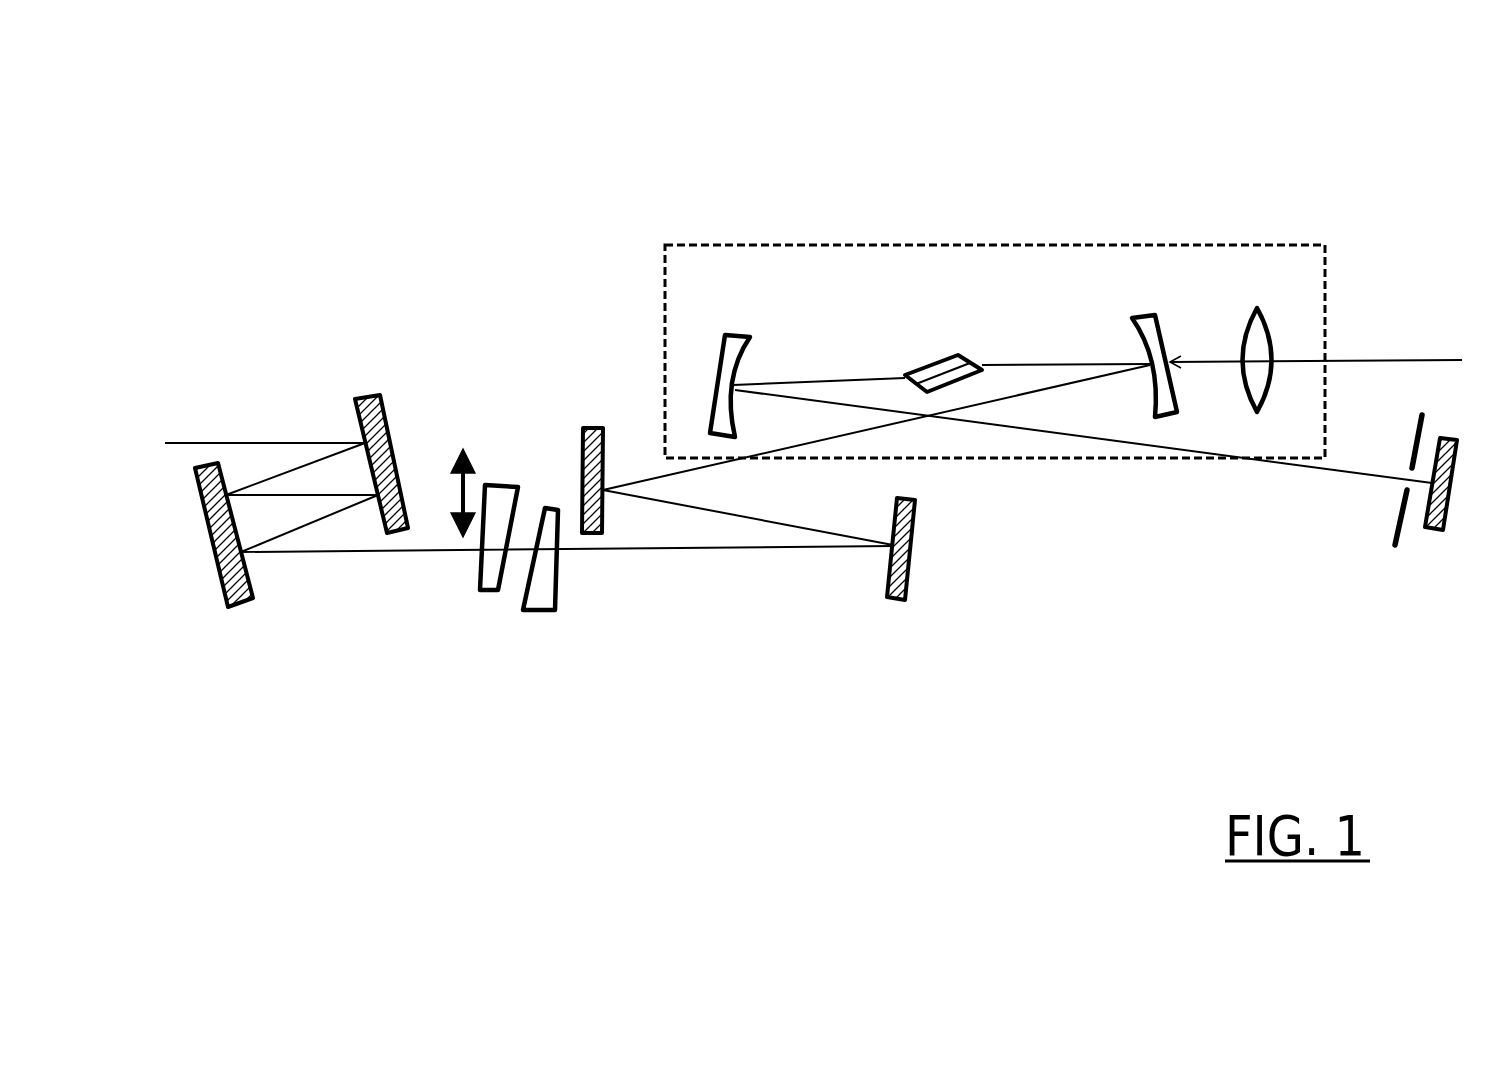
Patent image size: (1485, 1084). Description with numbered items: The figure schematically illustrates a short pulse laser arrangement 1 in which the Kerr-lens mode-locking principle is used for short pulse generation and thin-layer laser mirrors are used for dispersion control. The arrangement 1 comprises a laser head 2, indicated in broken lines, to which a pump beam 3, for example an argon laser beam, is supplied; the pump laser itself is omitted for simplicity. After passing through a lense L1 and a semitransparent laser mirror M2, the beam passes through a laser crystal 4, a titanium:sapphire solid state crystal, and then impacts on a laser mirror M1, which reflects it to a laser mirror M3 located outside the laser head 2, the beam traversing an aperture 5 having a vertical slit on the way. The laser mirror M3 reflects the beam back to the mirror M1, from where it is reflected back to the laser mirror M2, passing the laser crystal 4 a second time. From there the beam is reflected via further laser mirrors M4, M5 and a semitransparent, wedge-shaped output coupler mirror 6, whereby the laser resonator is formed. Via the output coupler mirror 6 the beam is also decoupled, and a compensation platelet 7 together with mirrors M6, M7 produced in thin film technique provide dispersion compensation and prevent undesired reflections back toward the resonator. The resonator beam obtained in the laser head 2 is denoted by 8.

The short pulse laser arrangement 1 is at (501, 255).
The laser head 2 is at (797, 246).
The pump beam 3 is at (1392, 358).
The laser crystal 4 is at (962, 353).
The aperture 5 is at (1395, 533).
The output coupler mirror 6 is at (540, 612).
The compensation platelet 7 is at (485, 592).
The resonator beam 8 is at (798, 377).
The laser mirror M1 is at (731, 335).
The semitransparent laser mirror M2 is at (1133, 320).
The laser mirror M3 is at (1433, 530).
The laser mirror M4 is at (582, 460).
The laser mirror M5 is at (910, 580).
The mirror M6 is at (222, 583).
The mirror M7 is at (380, 400).
The lense L1 is at (1247, 322).